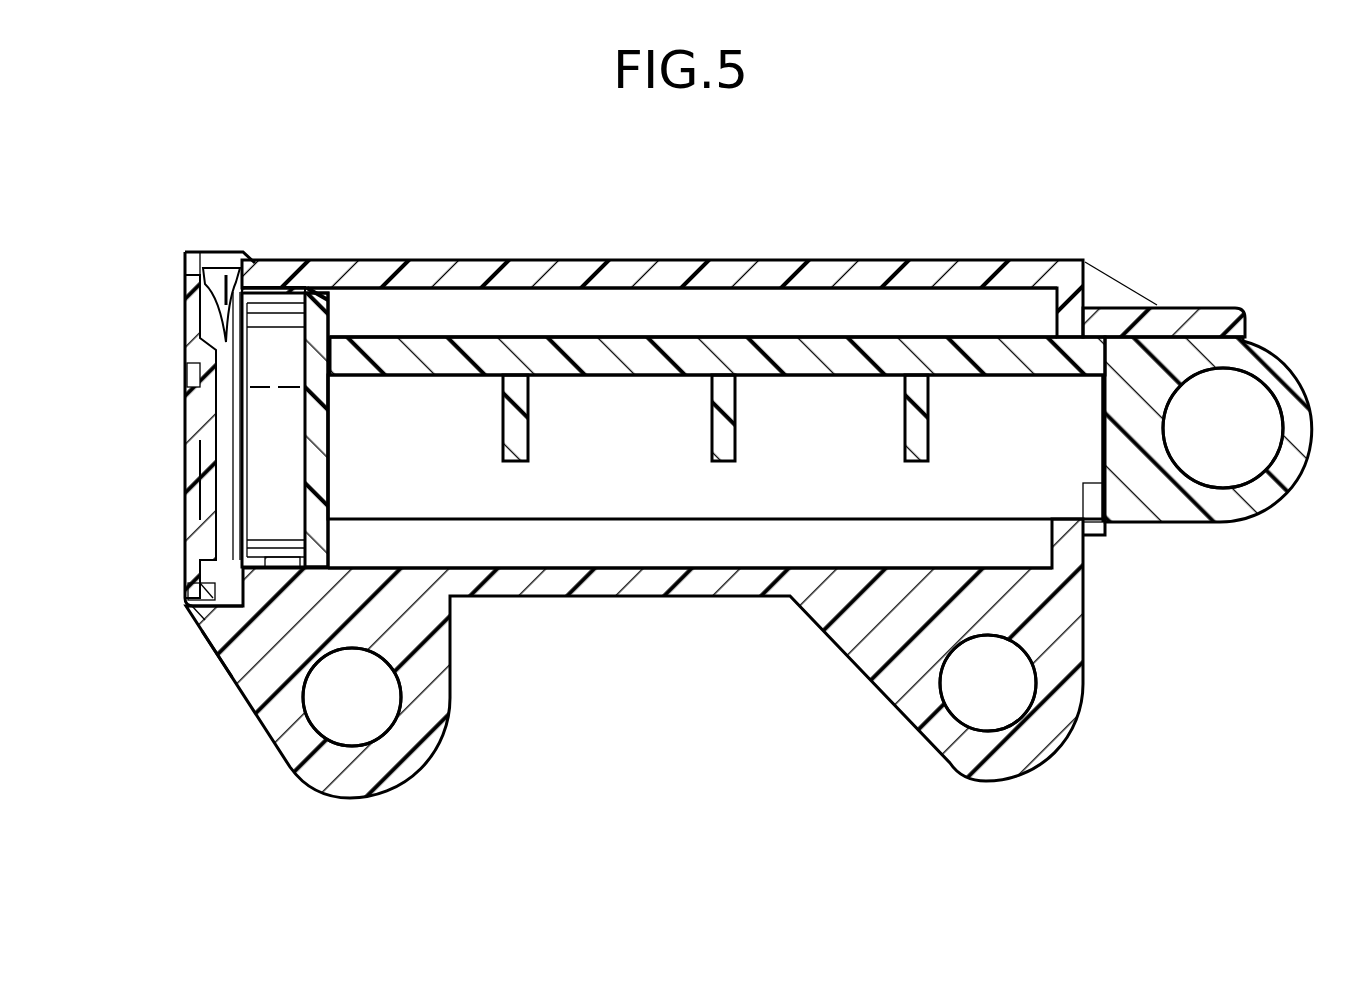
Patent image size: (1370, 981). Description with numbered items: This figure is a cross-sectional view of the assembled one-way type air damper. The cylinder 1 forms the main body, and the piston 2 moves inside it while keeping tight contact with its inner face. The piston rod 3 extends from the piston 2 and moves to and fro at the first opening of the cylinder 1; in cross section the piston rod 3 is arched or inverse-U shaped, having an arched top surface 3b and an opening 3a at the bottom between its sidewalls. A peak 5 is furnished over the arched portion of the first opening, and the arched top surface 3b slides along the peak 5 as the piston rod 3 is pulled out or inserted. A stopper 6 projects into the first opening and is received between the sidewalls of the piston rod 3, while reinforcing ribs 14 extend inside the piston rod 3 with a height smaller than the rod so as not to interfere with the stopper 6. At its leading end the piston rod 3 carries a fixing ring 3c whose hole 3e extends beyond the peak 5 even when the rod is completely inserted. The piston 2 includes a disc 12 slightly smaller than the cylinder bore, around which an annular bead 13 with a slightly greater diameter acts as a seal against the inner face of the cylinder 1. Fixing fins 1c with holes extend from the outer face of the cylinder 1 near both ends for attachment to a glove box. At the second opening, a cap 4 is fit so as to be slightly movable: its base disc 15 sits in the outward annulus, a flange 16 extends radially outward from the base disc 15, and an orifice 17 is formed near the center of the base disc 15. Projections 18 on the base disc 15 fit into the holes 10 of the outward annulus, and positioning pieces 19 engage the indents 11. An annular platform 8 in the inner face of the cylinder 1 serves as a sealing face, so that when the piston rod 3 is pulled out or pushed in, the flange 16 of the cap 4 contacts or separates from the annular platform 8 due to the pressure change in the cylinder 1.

The cylinder 1 is at (668, 257).
The fixing fins 1c is at (346, 783).
The piston 2 is at (342, 455).
The piston rod 3 is at (967, 333).
The opening 3a is at (610, 492).
The arched top surface 3b is at (788, 337).
The fixing ring 3c is at (1262, 500).
The hole 3e is at (1237, 428).
The cap 4 is at (178, 520).
The peak 5 is at (1198, 320).
The stopper 6 is at (1096, 496).
The annular platform 8 is at (210, 640).
The holes 10 is at (206, 262).
The indents 11 is at (196, 606).
The disc 12 is at (316, 322).
The annular bead 13 is at (252, 293).
The reinforcing ribs 14 is at (520, 462).
The base disc 15 is at (190, 478).
The flange 16 is at (232, 430).
The orifice 17 is at (198, 380).
The projections 18 is at (205, 282).
The positioning pieces 19 is at (190, 592).